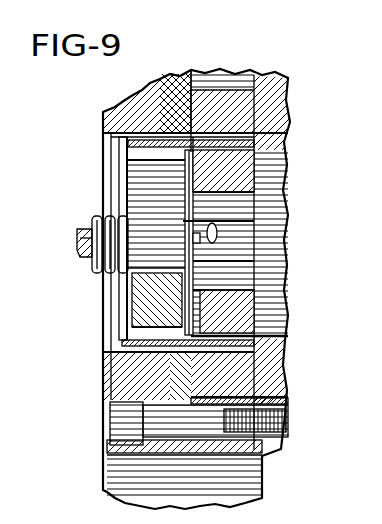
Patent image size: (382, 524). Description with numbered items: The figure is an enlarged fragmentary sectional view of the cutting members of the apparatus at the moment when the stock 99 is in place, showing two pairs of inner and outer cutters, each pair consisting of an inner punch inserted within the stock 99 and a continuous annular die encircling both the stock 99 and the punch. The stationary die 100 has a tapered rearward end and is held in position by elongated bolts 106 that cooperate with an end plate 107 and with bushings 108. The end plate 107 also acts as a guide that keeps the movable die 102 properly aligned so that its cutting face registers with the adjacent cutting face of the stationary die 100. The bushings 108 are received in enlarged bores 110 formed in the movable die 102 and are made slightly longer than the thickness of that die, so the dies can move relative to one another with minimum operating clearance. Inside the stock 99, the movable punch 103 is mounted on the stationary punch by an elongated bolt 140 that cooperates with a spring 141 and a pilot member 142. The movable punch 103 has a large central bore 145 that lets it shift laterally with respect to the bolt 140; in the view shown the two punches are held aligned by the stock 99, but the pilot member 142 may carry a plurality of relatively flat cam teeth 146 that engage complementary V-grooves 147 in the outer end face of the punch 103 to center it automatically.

The stock 99 is at (292, 337).
The stationary die 100 is at (263, 100).
The movable die 102 is at (228, 97).
The movable punch 103 is at (245, 167).
The elongated bolts 106 is at (283, 419).
The end plate 107 is at (133, 98).
The bushings 108 is at (261, 456).
The enlarged bores 110 is at (206, 82).
The elongated bolt 140 is at (75, 238).
The spring 141 is at (97, 218).
The pilot member 142 is at (128, 182).
The central bore 145 is at (251, 213).
The cam teeth 146 is at (123, 213).
The V-grooves 147 is at (193, 152).